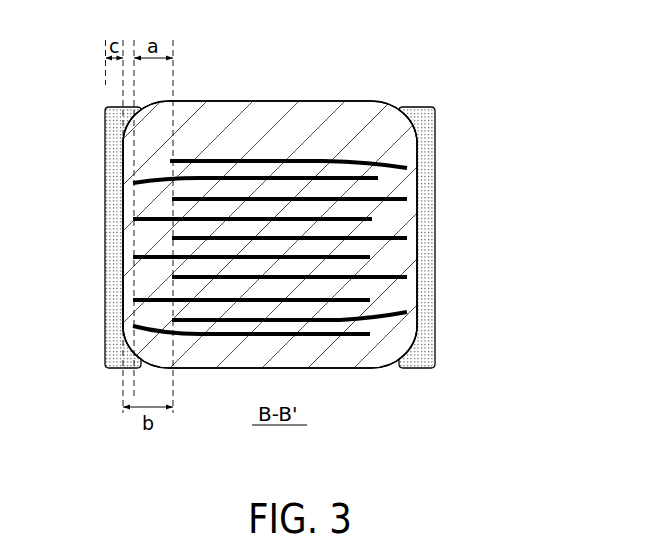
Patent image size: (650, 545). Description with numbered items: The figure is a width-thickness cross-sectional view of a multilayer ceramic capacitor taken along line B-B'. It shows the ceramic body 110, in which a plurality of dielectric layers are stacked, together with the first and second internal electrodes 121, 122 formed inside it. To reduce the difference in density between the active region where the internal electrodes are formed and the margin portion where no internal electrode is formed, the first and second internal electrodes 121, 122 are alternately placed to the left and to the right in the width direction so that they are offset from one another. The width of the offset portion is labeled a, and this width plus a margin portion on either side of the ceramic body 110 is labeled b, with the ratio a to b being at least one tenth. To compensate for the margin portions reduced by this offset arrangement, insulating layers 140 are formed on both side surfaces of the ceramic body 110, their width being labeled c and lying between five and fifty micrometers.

The ceramic body 110 is at (325, 269).
The first internal electrode 121 is at (384, 161).
The second internal electrode 122 is at (378, 176).
The insulating layer 140 is at (113, 237).